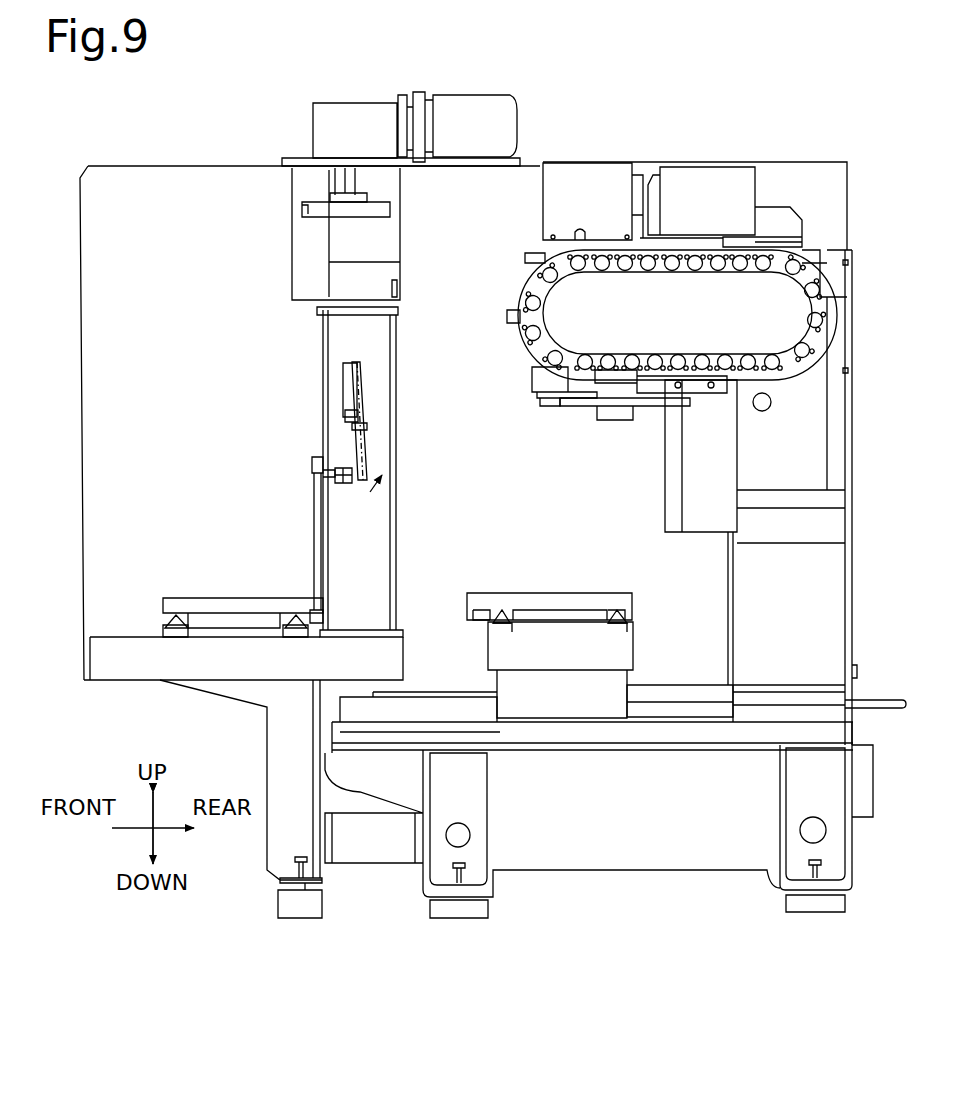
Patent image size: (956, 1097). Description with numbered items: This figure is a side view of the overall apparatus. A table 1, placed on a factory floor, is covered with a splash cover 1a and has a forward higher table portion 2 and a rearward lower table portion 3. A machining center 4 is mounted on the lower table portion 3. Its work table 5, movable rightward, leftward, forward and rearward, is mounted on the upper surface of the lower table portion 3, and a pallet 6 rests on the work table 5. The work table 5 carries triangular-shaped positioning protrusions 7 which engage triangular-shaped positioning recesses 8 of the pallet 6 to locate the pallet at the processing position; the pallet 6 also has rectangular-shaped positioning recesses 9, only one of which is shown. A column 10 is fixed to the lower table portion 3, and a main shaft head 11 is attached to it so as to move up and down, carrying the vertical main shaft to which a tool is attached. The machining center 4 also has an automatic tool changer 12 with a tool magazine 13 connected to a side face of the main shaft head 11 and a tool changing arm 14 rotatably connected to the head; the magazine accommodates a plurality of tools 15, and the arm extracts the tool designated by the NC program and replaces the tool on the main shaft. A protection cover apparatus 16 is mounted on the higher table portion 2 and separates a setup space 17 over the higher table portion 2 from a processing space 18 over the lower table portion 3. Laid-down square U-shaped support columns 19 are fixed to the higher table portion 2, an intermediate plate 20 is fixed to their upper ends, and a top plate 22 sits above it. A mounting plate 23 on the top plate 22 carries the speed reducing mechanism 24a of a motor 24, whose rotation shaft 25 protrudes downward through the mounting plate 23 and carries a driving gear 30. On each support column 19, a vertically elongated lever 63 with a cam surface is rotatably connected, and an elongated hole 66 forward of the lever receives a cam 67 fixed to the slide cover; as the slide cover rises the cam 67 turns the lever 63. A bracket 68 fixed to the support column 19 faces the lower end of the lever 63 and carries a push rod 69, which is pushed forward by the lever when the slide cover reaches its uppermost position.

The table 1 is at (85, 688).
The splash cover 1a is at (203, 166).
The higher table portion 2 is at (115, 637).
The lower table portion 3 is at (597, 752).
The machining center 4 is at (855, 440).
The work table 5 is at (633, 648).
The pallet 6 is at (227, 598).
The positioning protrusions 7 is at (170, 612).
The positioning recesses 8 is at (172, 637).
The positioning recesses 9 is at (325, 613).
The column 10 is at (728, 580).
The main shaft head 11 is at (535, 388).
The automatic tool changer 12 is at (518, 292).
The tool magazine 13 is at (847, 298).
The tool changing arm 14 is at (573, 406).
The tools 15 is at (604, 255).
The protection cover apparatus 16 is at (398, 435).
The setup space 17 is at (155, 387).
The processing space 18 is at (475, 500).
The support columns 19 is at (398, 545).
The intermediate plate 20 is at (292, 300).
The top plate 22 is at (400, 183).
The mounting plate 23 is at (290, 158).
The motor 24 is at (460, 95).
The speed reducing mechanism 24a is at (345, 103).
The rotation shaft 25 is at (357, 178).
The driving gear 30 is at (300, 210).
The lever 63 is at (365, 365).
The elongated hole 66 is at (343, 385).
The cam 67 is at (345, 417).
The bracket 68 is at (343, 485).
The push rod 69 is at (312, 480).